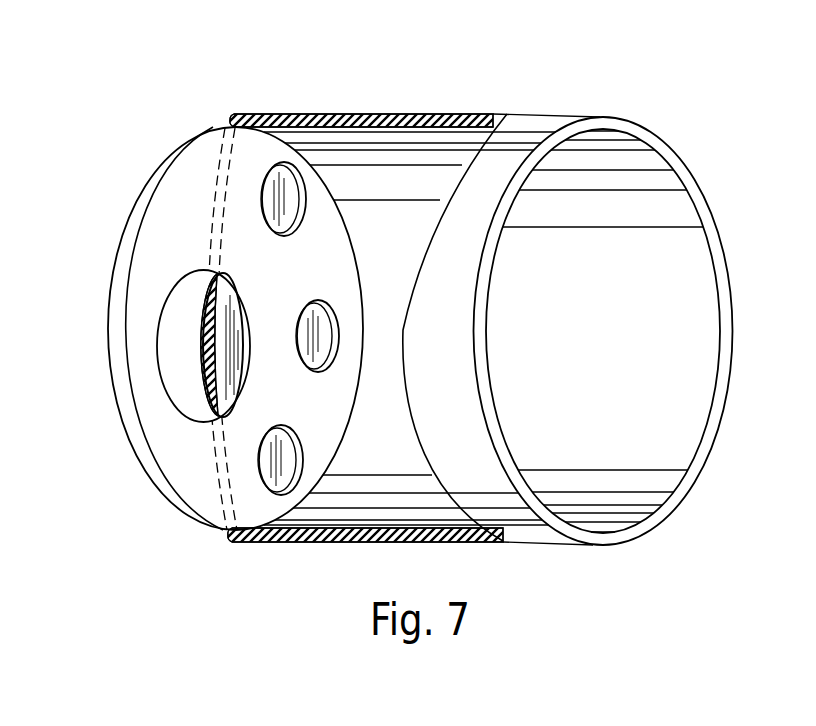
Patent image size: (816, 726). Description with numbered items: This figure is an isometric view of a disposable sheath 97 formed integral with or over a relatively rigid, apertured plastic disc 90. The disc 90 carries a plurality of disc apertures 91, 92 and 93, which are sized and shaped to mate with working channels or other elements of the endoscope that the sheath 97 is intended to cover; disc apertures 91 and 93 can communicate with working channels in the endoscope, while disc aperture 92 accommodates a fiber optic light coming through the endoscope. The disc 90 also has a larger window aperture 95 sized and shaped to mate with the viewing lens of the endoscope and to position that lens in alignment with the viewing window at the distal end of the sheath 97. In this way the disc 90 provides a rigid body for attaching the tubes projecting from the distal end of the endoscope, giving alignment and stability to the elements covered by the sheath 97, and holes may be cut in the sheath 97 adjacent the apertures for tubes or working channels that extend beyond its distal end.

The disc 90 is at (120, 240).
The disc aperture 91 is at (281, 163).
The disc aperture 92 is at (300, 350).
The disc aperture 93 is at (263, 487).
The window aperture 95 is at (160, 382).
The sheath 97 is at (497, 113).